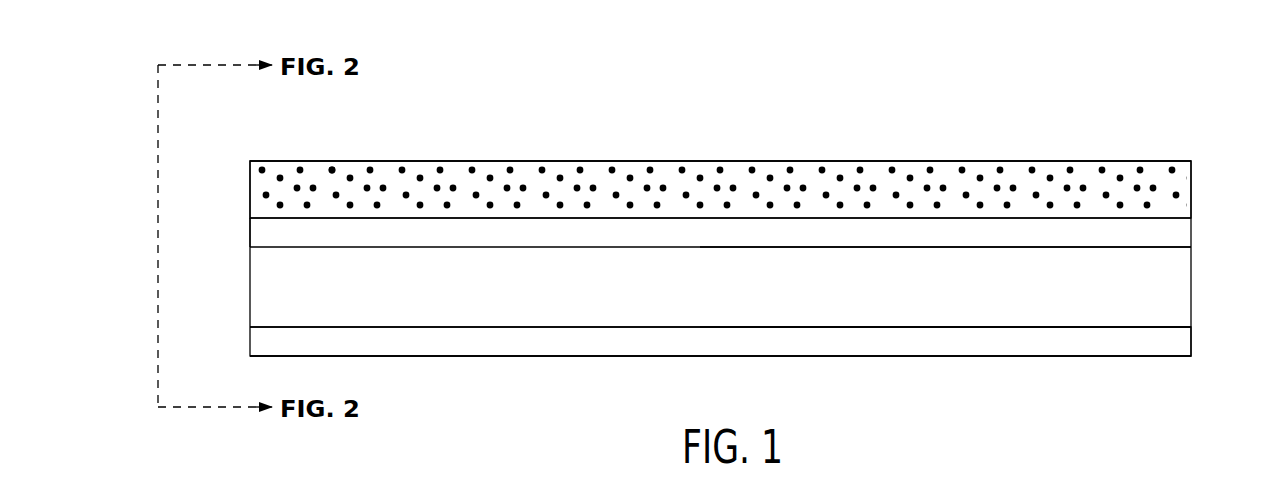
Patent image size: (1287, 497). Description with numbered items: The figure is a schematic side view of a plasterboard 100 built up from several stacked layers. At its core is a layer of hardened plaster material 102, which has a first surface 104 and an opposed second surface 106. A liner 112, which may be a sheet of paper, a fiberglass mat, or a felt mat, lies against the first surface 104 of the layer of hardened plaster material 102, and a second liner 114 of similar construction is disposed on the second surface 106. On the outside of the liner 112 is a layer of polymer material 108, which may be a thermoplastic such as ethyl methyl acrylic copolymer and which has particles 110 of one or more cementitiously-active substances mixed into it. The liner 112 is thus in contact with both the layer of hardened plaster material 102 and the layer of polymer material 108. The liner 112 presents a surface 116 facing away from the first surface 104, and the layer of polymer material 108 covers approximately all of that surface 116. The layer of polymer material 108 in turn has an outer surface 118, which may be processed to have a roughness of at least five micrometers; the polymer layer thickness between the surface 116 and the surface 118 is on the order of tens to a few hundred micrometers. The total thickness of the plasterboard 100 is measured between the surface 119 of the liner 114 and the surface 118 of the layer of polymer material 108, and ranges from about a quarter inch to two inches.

The plasterboard 100 is at (1168, 84).
The layer of hardened plaster material 102 is at (1183, 286).
The first surface 104 is at (1023, 248).
The second surface 106 is at (990, 328).
The layer of polymer material 108 is at (1213, 158).
The particles 110 is at (335, 168).
The liner 112 is at (254, 234).
The liner 114 is at (1183, 345).
The surface 116 is at (636, 218).
The surface 118 is at (710, 160).
The surface 119 is at (835, 358).